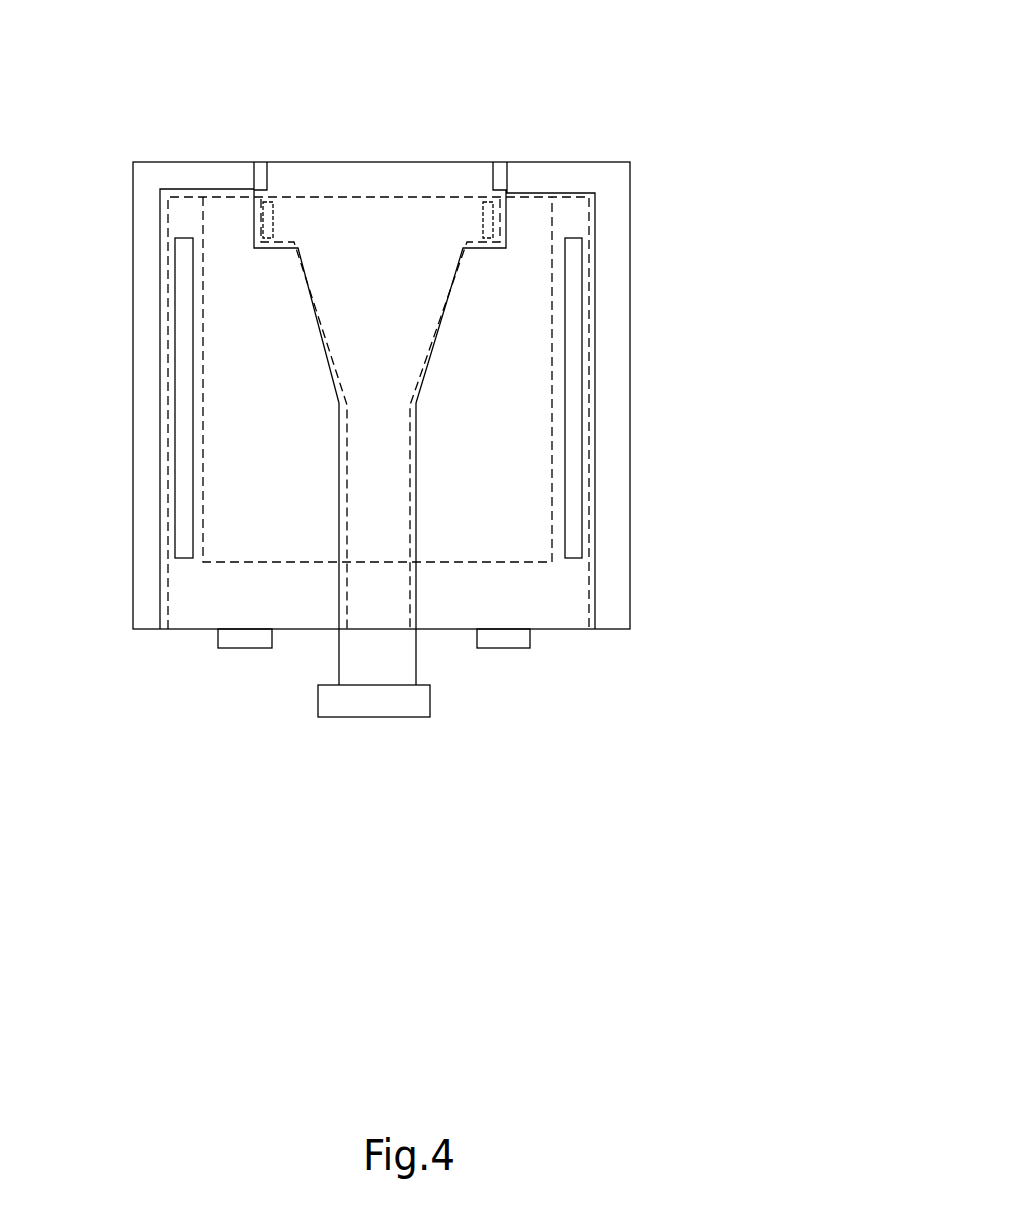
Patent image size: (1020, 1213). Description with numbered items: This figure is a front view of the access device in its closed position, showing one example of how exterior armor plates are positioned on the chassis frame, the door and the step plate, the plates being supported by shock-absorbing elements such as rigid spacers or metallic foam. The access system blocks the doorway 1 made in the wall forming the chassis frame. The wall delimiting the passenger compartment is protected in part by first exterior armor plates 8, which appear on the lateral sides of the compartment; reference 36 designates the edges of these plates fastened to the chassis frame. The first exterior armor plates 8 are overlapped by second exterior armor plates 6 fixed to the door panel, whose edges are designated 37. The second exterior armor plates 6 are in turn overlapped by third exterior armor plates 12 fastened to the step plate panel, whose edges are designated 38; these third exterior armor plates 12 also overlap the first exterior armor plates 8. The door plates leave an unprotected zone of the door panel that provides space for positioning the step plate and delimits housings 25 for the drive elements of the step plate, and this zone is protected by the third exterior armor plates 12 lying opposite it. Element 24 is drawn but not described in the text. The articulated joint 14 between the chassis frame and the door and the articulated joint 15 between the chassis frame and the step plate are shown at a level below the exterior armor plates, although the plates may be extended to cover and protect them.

The doorway 1 is at (317, 568).
The second exterior armor plates 6 is at (190, 615).
The first exterior armor plates 8 is at (228, 172).
The third exterior armor plates 12 is at (390, 605).
The articulated joint 14 is at (235, 650).
The articulated joint 15 is at (333, 712).
The element 24 is at (183, 461).
The housings 25 is at (272, 215).
The edges of the exterior armor plates fastened to the chassis frame 36 is at (190, 188).
The edges of the exterior armor plates fastened to the door panel 37 is at (170, 187).
The edges of the exterior armor plates fastened to the step plate panel 38 is at (253, 176).